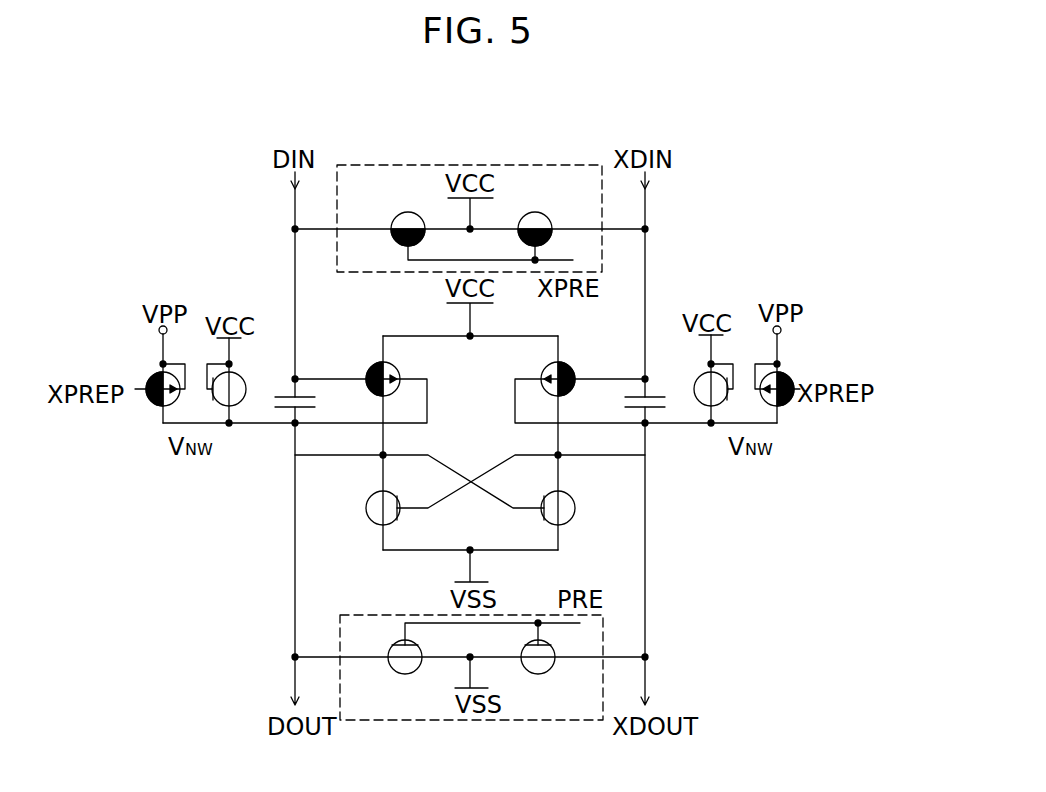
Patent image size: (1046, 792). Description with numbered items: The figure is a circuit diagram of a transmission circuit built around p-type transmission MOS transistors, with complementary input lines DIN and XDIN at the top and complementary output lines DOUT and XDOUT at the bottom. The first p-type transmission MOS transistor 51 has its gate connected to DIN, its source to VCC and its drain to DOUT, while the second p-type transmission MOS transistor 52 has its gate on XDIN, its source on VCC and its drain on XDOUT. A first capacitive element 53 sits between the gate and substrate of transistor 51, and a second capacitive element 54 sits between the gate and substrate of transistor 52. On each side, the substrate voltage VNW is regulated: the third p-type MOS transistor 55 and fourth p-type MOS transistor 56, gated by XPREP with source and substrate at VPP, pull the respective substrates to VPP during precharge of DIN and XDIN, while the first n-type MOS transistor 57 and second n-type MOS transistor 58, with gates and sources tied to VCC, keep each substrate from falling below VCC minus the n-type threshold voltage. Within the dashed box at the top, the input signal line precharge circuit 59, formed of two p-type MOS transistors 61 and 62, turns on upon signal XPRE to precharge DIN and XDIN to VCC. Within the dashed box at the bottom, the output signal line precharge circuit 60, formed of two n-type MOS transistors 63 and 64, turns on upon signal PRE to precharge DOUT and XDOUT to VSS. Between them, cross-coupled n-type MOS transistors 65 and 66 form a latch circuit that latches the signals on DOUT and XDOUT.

The first p-type transmission MOS transistor 51 is at (399, 376).
The second p-type transmission MOS transistor 52 is at (573, 373).
The first capacitive element 53 is at (305, 395).
The second capacitive element 54 is at (652, 392).
The third p-type MOS transistor 55 is at (152, 407).
The fourth p-type MOS transistor 56 is at (790, 377).
The first n-type MOS transistor 57 is at (243, 378).
The second n-type MOS transistor 58 is at (701, 405).
The input signal line precharge circuit 59 is at (548, 165).
The output signal line precharge circuit 60 is at (508, 722).
The p-type MOS transistor 61 is at (400, 213).
The p-type MOS transistor 62 is at (540, 214).
The n-type MOS transistor 63 is at (400, 675).
The n-type MOS transistor 64 is at (546, 675).
The n-type MOS transistor of latch circuit 65 is at (367, 520).
The n-type MOS transistor of latch circuit 66 is at (578, 500).